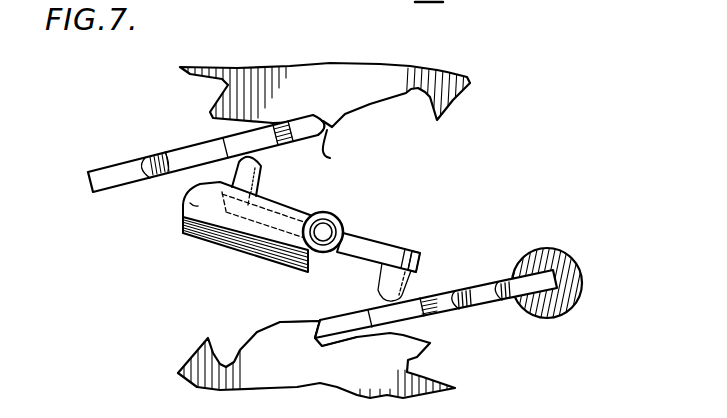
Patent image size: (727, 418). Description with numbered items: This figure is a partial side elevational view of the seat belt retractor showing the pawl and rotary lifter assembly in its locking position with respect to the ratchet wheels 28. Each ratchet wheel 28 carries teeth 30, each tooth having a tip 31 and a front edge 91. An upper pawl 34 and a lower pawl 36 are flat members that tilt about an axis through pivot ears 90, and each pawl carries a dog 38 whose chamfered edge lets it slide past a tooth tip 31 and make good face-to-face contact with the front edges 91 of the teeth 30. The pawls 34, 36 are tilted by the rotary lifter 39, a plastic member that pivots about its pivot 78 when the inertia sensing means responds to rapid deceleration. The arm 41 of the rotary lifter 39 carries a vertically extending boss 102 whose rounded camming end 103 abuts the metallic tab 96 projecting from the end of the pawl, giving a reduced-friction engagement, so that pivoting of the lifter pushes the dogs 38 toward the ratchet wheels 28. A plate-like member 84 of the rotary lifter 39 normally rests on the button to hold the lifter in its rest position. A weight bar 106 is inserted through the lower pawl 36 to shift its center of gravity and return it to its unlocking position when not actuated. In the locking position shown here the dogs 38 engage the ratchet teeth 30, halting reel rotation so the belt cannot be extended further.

The ratchet wheel 28 is at (253, 45).
The ratchet tooth 30 is at (283, 333).
The tip of a tooth 31 is at (320, 320).
The upper pawl 34 is at (119, 153).
The lower pawl 36 is at (497, 264).
The pawl dog 38 is at (336, 152).
The rotary lifter 39 is at (404, 232).
The arm of the rotary lifter 41 is at (365, 236).
The pivot ring 78 is at (343, 200).
The plate-like member 84 is at (183, 203).
The pivot ears 90 is at (177, 150).
The front edges of the ratchet teeth 91 is at (323, 150).
The tab 96 is at (270, 147).
The boss 102 is at (410, 284).
The rounded camming end 103 is at (352, 343).
The weight bar 106 is at (548, 249).